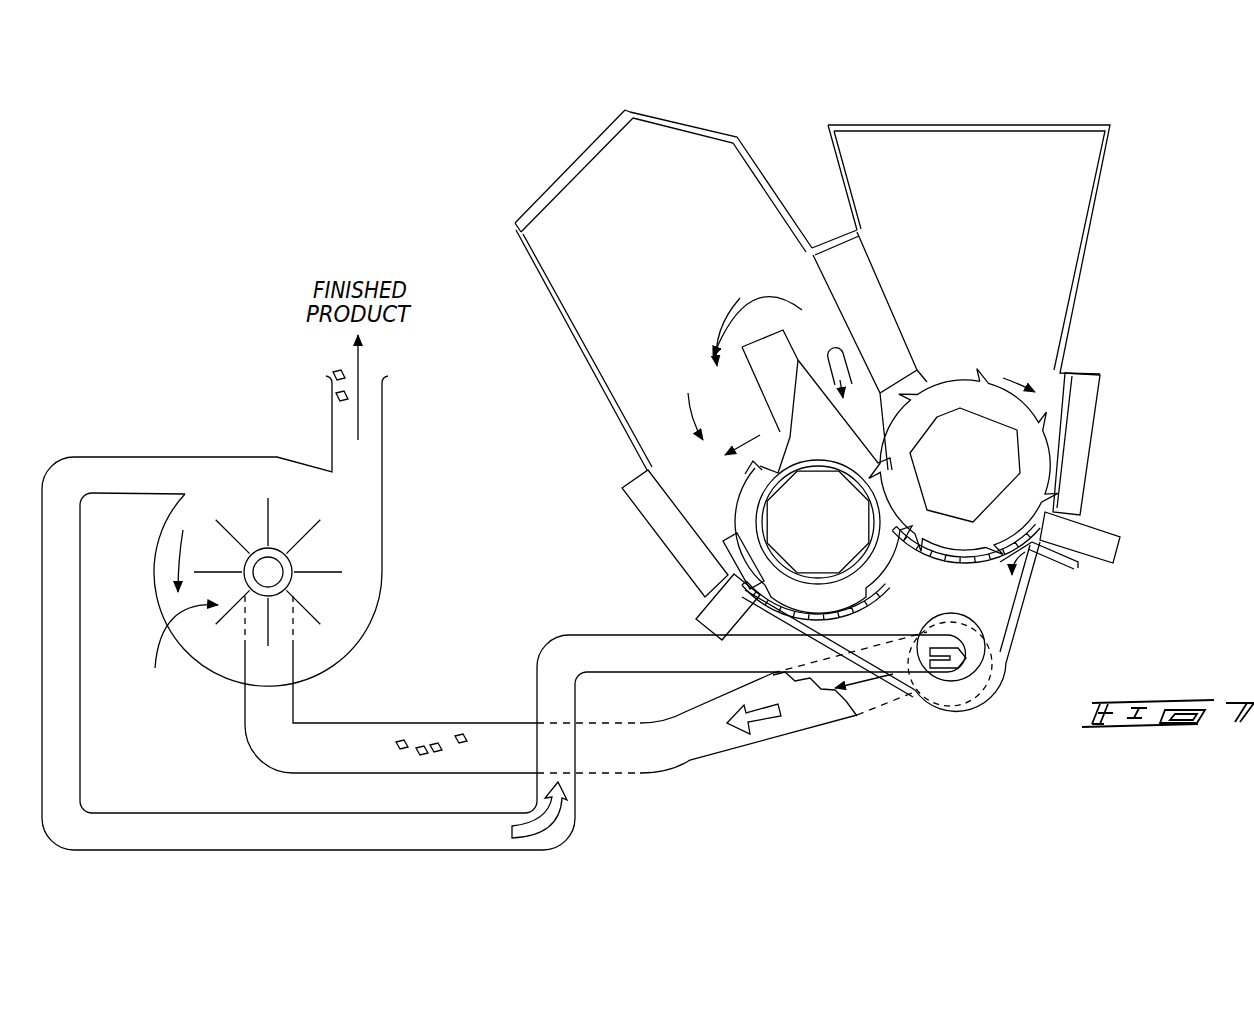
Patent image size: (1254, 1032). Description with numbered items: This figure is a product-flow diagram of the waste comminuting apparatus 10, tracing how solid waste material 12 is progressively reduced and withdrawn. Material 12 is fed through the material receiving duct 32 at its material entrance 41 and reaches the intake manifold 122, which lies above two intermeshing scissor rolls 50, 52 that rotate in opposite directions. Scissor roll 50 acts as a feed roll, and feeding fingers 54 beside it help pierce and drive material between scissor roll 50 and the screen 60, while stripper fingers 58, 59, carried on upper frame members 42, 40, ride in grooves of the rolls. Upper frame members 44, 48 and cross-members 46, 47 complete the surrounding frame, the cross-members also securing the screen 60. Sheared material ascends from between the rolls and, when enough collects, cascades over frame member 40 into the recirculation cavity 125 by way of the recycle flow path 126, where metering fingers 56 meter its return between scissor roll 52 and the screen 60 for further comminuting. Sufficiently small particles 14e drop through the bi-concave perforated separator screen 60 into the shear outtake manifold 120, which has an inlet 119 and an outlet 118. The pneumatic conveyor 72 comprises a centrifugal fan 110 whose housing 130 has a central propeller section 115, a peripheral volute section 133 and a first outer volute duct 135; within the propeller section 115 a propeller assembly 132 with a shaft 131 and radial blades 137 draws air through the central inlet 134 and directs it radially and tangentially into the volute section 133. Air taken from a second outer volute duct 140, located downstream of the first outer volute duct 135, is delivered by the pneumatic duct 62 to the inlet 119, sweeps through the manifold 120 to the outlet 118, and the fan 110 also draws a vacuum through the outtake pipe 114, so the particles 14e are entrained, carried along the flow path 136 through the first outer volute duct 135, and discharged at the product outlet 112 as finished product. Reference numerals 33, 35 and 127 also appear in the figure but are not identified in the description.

The waste comminuting apparatus 10 is at (1153, 575).
The solid waste material 12 is at (1080, 263).
The material receiving duct 32 is at (1115, 153).
The first hopper 33 is at (566, 125).
The hopper side wall 35 is at (570, 163).
The upper frame member 40 is at (778, 382).
The material entrance 41 is at (957, 147).
The upper frame member 42 is at (870, 270).
The upper frame member 44 is at (1082, 420).
The cross-member 46 is at (1097, 540).
The cross-member 47 is at (715, 608).
The upper frame member 48 is at (638, 494).
The scissor roll 50 is at (1098, 348).
The scissor roll 52 is at (721, 376).
The feeding fingers 54 is at (1067, 392).
The metering fingers 56 is at (725, 553).
The stripper finger 58 is at (830, 440).
The stripper finger 59 is at (922, 380).
The separator screen 60 is at (905, 572).
The pneumatic duct 62 is at (545, 640).
The pneumatic conveyor 72 is at (147, 446).
The centrifugal fan 110 is at (263, 455).
The product outlet 112 is at (385, 383).
The outtake pipe 114 is at (440, 722).
The central propeller section 115 is at (177, 652).
The outlet 118 is at (1012, 656).
The inlet 119 is at (958, 616).
The shear outtake manifold 120 is at (1042, 556).
The intake manifold 122 is at (1013, 218).
The recirculation cavity 125 is at (664, 255).
The recycle flow path 126 is at (737, 312).
The guide tongue 127 is at (840, 350).
The housing 130 is at (160, 543).
The shaft 131 is at (260, 550).
The propeller assembly 132 is at (280, 550).
The peripheral volute section 133 is at (345, 636).
The central inlet 134 is at (293, 560).
The first outer volute duct 135 is at (383, 462).
The flow path 136 is at (358, 423).
The radial blades 137 is at (307, 577).
The second outer volute duct 140 is at (192, 457).
The particles 14e is at (337, 373).